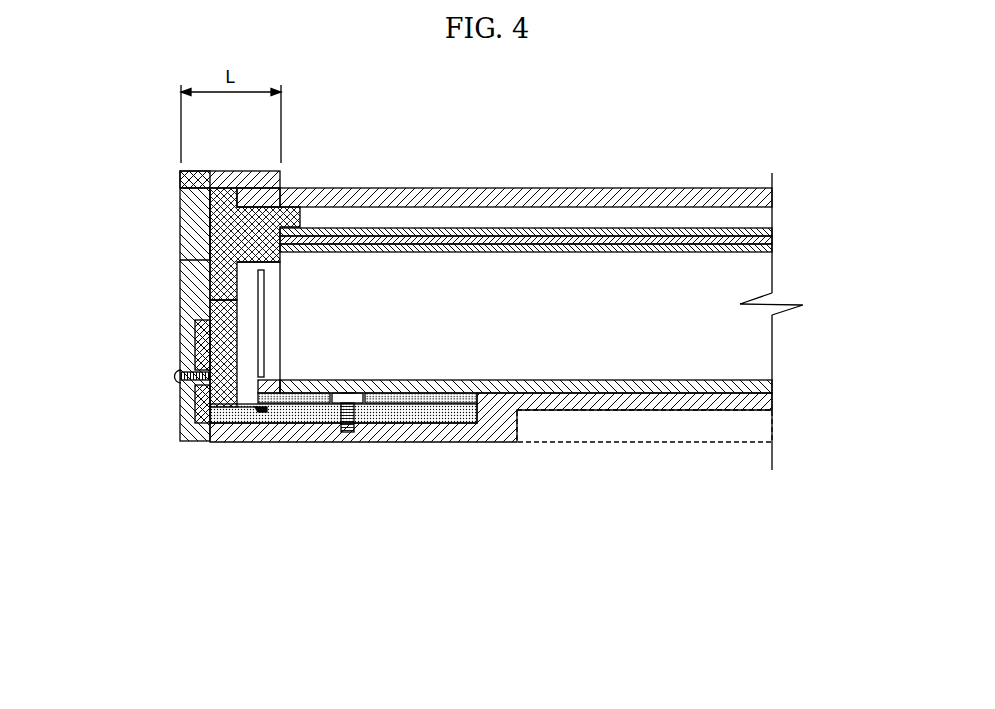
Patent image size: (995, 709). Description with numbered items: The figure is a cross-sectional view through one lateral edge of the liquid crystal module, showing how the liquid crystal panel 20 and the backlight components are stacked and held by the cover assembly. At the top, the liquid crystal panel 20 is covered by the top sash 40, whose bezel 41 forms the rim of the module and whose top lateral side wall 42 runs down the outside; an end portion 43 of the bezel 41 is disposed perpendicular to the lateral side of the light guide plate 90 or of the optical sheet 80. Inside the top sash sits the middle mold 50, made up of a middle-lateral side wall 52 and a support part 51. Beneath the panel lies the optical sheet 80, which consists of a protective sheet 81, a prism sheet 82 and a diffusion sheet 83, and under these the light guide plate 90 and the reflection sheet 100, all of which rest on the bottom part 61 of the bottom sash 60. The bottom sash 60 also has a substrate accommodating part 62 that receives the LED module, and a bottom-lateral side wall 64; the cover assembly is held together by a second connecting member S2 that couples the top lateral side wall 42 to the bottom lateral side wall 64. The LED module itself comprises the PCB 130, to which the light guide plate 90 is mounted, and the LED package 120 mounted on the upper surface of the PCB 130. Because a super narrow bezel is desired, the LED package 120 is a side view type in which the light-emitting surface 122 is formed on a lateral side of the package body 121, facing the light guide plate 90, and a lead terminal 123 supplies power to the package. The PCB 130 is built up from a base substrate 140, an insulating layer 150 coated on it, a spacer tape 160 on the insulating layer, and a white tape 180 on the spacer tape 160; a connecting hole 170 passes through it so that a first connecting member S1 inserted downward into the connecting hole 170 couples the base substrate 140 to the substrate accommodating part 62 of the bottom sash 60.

The liquid crystal panel 20 is at (492, 188).
The top sash 40 is at (177, 356).
The bezel 41 is at (220, 180).
The top lateral side wall 42 is at (161, 213).
The end portion 43 is at (250, 210).
The middle mold 50 is at (183, 297).
The support part 51 is at (215, 222).
The middle-lateral side wall 52 is at (222, 274).
The bottom sash 60 is at (479, 534).
The bottom part 61 is at (583, 398).
The substrate accommodating part 62 is at (233, 418).
The bottom-lateral side wall 64 is at (190, 408).
The optical sheet 80 is at (581, 232).
The protective sheet 81 is at (772, 213).
The prism sheet 82 is at (772, 238).
The diffusion sheet 83 is at (561, 262).
The light guide plate 90 is at (760, 356).
The reflection sheet 100 is at (772, 386).
The LED package 120 is at (160, 342).
The package body 121 is at (215, 293).
The light-emitting surface 122 is at (266, 312).
The lead terminal 123 is at (162, 371).
The PCB 130 is at (343, 480).
The base substrate 140 is at (440, 410).
The insulating layer 150 is at (308, 401).
The spacer tape 160 is at (398, 399).
The connecting hole 170 is at (360, 420).
The white tape 180 is at (270, 448).
The first connecting member S1 is at (350, 392).
The second connecting member S2 is at (178, 378).